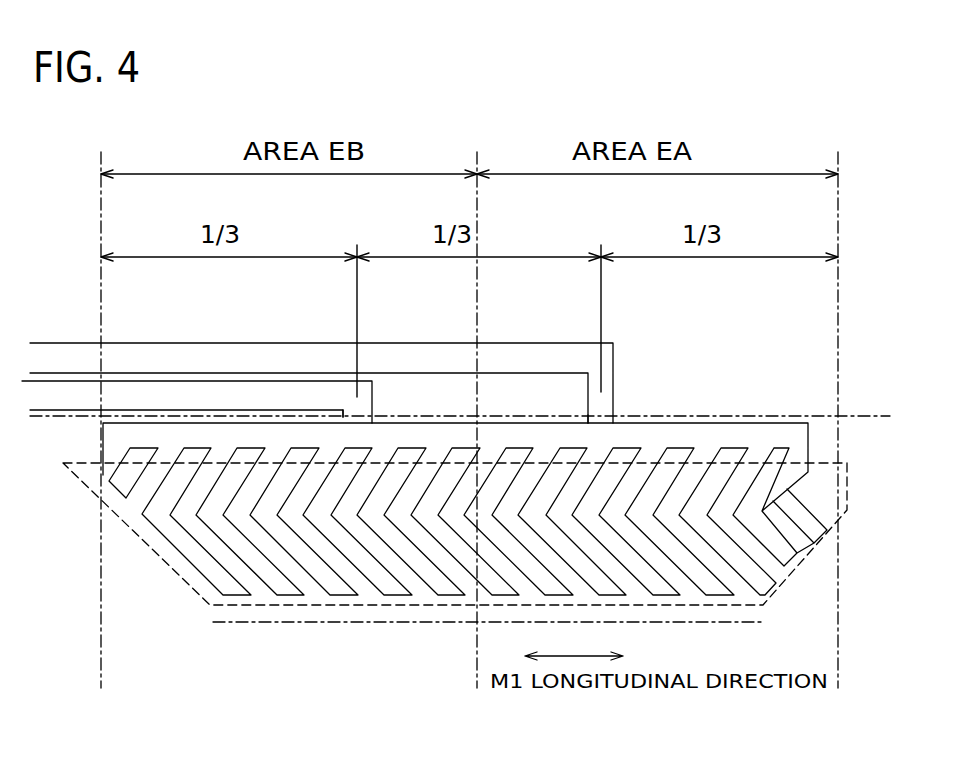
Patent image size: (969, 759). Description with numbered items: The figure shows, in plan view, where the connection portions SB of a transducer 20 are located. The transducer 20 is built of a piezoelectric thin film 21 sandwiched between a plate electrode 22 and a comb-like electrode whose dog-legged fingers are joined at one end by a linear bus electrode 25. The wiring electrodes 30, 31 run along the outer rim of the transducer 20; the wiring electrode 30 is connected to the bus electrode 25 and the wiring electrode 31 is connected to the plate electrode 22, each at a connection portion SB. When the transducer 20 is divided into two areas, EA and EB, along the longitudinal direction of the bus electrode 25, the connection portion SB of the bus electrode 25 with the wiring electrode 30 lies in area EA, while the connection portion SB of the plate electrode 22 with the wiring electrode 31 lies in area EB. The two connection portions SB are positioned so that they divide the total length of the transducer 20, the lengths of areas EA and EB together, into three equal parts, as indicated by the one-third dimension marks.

The transducer 20 is at (435, 648).
The piezoelectric thin film 21 is at (823, 430).
The plate electrode 22 is at (845, 510).
The bus electrode 25 is at (713, 435).
The wiring electrode 30 is at (503, 358).
The wiring electrode 31 is at (137, 390).
The connection portion SB is at (348, 452).